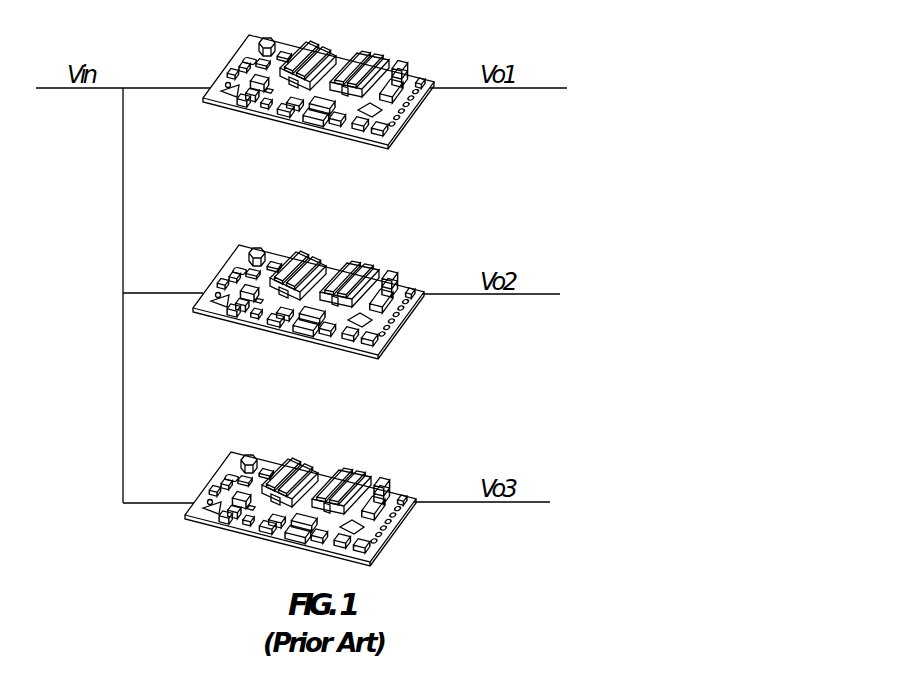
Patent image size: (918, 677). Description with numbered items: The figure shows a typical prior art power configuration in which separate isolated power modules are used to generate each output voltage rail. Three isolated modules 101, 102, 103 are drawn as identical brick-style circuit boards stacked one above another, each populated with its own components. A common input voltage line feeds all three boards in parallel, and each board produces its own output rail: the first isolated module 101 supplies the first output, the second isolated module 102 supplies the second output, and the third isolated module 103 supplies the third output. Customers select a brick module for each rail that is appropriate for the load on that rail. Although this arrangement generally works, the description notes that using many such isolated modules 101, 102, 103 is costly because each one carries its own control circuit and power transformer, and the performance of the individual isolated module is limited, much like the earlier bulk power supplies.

The isolated module 101 is at (229, 112).
The isolated module 102 is at (229, 322).
The isolated module 103 is at (229, 531).